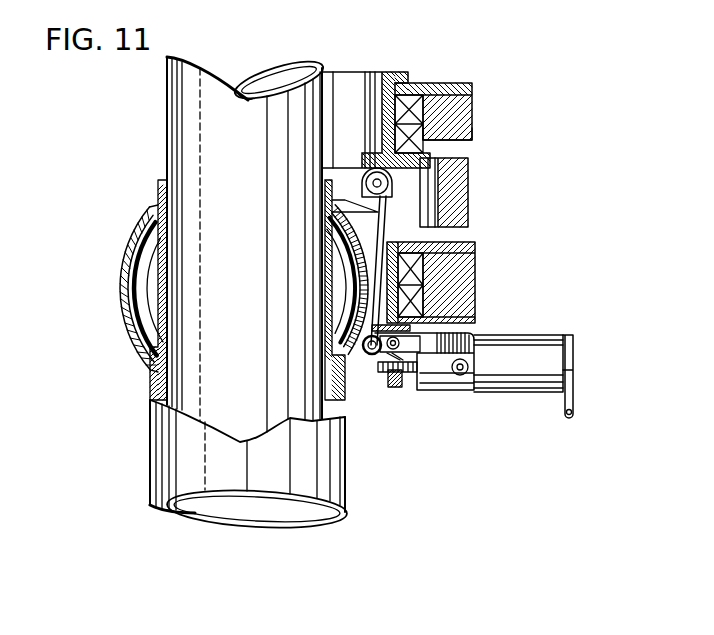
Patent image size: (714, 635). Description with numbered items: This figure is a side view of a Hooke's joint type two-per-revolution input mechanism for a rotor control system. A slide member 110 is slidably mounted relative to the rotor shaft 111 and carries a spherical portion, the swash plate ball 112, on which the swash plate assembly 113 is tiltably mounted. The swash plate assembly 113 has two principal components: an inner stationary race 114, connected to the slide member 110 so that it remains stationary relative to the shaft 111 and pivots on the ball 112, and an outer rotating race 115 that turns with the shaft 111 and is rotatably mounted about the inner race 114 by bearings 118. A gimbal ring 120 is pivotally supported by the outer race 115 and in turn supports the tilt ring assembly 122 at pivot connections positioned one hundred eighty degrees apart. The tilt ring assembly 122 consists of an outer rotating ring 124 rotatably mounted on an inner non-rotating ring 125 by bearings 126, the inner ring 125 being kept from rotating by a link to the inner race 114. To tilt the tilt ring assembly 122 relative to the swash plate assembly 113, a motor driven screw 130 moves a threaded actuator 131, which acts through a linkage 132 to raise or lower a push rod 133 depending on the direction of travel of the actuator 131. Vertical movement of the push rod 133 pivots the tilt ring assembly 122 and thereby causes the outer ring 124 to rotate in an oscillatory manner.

The slide member 110 is at (150, 419).
The shaft 111 is at (248, 353).
The swash plate ball 112 is at (132, 317).
The swash plate assembly 113 is at (476, 246).
The inner stationary race 114 is at (386, 242).
The outer rotating race 115 is at (460, 272).
The bearings 118 is at (415, 300).
The gimbal ring 120 is at (462, 190).
The tilt ring assembly 122 is at (472, 95).
The outer rotating ring 124 is at (457, 128).
The inner non-rotating ring 125 is at (363, 80).
The bearings 126 is at (408, 105).
The motor driven screw 130 is at (409, 375).
The threaded actuator 131 is at (398, 388).
The linkage 132 is at (372, 356).
The push rod 133 is at (333, 207).